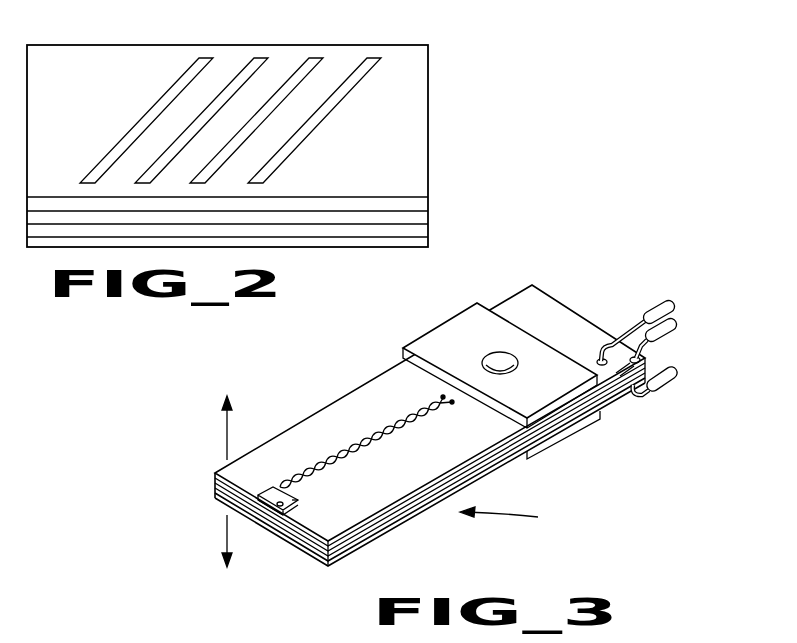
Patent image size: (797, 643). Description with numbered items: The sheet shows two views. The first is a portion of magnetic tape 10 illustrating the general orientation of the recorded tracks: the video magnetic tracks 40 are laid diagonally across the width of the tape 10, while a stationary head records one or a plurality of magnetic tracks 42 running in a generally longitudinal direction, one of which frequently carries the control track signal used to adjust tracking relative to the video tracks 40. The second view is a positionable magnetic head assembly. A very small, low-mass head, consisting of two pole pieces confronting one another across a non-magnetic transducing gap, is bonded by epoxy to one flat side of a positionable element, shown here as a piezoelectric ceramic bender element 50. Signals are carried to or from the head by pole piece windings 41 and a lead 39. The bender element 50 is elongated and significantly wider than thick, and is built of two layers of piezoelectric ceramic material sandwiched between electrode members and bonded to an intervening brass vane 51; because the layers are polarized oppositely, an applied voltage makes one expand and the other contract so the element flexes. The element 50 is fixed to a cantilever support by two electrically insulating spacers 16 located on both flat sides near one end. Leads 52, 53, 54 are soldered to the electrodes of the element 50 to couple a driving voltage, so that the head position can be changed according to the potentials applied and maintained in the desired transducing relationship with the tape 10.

In FIG. 2, the tape 10 is at (122, 62).
In FIG. 2, the magnetic tracks 40 is at (262, 58).
In FIG. 2, the magnetic tracks 42 is at (420, 229).
In FIG. 3, the brass vane 51 is at (215, 489).
In FIG. 3, the electrically insulating spacers 16 is at (440, 330).
In FIG. 3, the pole piece windings 41 is at (283, 506).
In FIG. 3, the lead 39 is at (397, 430).
In FIG. 3, the lead 52 is at (662, 304).
In FIG. 3, the lead 53 is at (678, 319).
In FIG. 3, the lead 54 is at (678, 369).
In FIG. 3, the piezoelectric ceramic bender element 50 is at (519, 515).